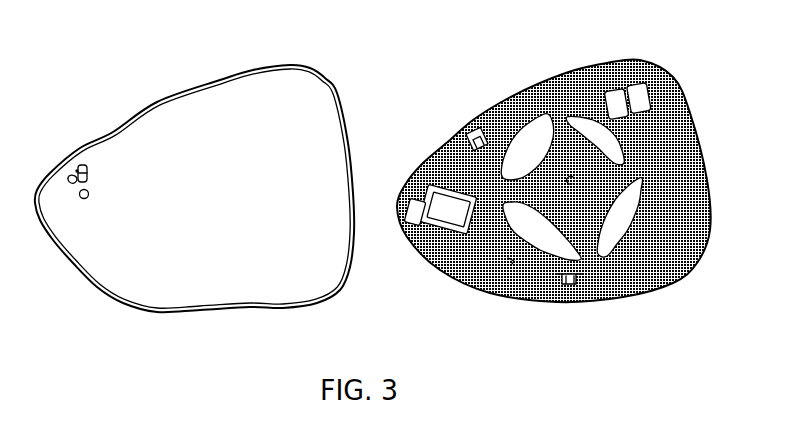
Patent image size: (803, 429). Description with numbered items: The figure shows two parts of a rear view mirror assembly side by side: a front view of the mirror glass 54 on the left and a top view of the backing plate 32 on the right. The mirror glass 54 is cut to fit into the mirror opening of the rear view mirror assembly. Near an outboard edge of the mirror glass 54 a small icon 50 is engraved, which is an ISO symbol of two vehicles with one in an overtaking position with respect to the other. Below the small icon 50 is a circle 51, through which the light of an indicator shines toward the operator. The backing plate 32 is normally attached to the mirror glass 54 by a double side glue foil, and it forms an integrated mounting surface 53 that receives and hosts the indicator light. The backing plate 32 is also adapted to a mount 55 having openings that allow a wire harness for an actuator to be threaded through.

The back plate 32 is at (554, 192).
The small icon 50 is at (80, 165).
The circle 51 is at (84, 199).
The integrated mounting surface 53 is at (443, 220).
The mirror glass 54 is at (250, 88).
The mount 55 is at (627, 224).